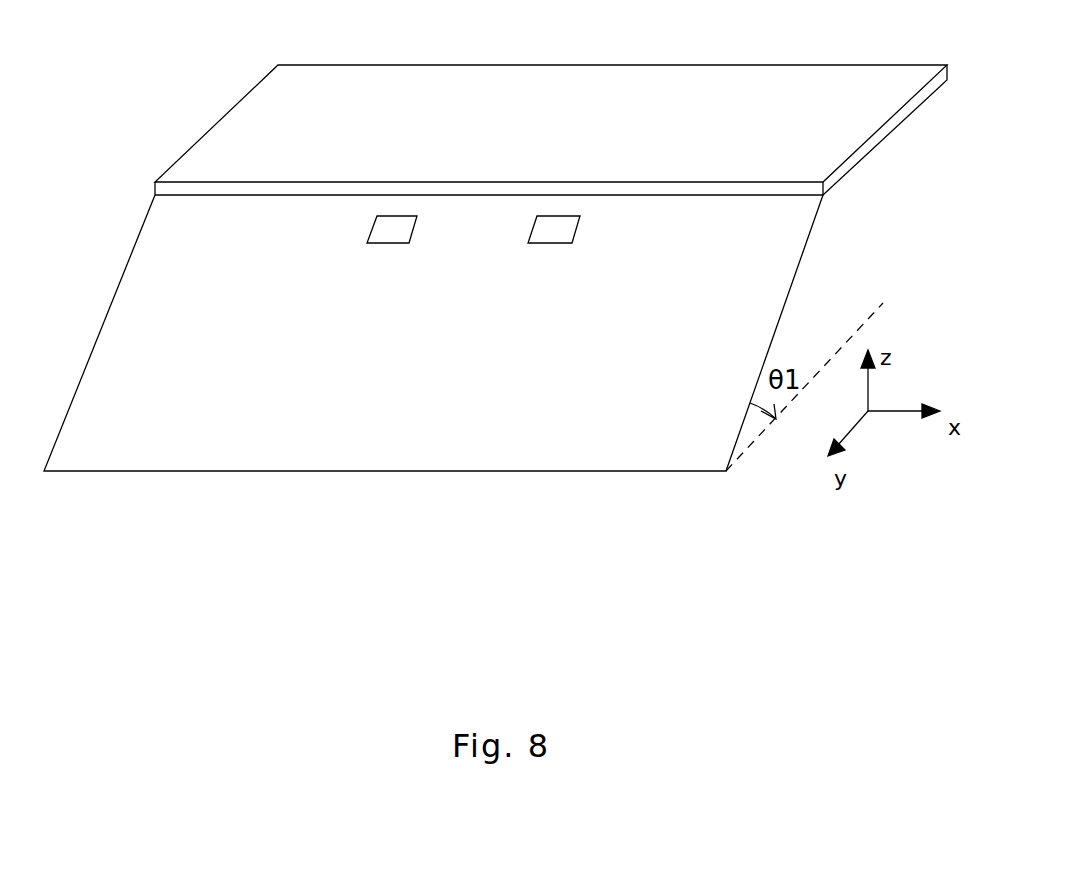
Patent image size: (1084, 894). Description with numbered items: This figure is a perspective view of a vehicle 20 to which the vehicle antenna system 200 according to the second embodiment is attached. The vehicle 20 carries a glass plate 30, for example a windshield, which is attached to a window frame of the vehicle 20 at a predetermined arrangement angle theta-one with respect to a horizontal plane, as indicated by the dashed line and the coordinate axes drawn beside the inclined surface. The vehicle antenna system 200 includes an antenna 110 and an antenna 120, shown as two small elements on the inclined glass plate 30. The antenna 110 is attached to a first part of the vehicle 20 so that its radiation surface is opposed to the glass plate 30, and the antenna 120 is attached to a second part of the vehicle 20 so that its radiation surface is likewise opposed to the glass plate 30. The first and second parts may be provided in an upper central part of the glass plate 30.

The vehicle 20 is at (848, 77).
The glass plate 30 is at (613, 485).
The vehicle antenna system 200 is at (447, 263).
The antenna 110 is at (417, 230).
The antenna 120 is at (580, 230).